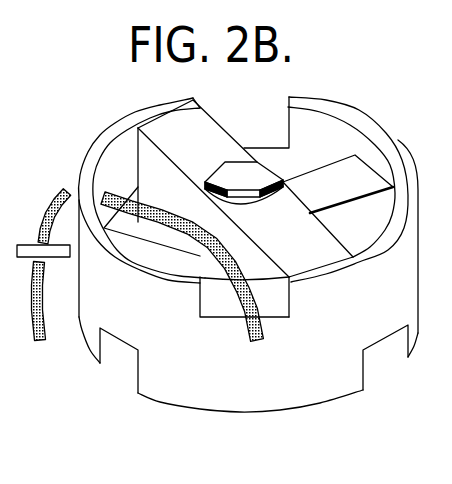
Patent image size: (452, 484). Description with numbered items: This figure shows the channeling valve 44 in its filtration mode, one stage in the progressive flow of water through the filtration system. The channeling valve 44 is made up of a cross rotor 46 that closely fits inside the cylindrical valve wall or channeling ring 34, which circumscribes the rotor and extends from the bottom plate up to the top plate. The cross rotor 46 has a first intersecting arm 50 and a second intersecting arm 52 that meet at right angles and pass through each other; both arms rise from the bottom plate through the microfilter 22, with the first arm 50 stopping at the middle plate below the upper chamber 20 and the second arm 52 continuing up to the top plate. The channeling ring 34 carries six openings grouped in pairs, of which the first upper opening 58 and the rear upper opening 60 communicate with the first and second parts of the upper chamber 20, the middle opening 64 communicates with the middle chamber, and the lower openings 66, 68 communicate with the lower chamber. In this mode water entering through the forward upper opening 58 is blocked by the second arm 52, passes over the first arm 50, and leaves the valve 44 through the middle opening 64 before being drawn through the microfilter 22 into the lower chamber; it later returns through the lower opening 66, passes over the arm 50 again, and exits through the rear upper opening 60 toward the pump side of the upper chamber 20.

The upper chamber 20 is at (444, 221).
The microfilter 22 is at (25, 245).
The channeling ring 34 is at (412, 178).
The channeling valve 44 is at (399, 144).
The cross rotor 46 is at (177, 135).
The first intersecting arm 50 is at (152, 246).
The second intersecting arm 52 is at (310, 259).
The first upper opening 58 is at (290, 300).
The rear upper opening 60 is at (288, 117).
The middle opening 64 is at (118, 168).
The lower opening 66 is at (364, 360).
The lower opening 68 is at (100, 347).